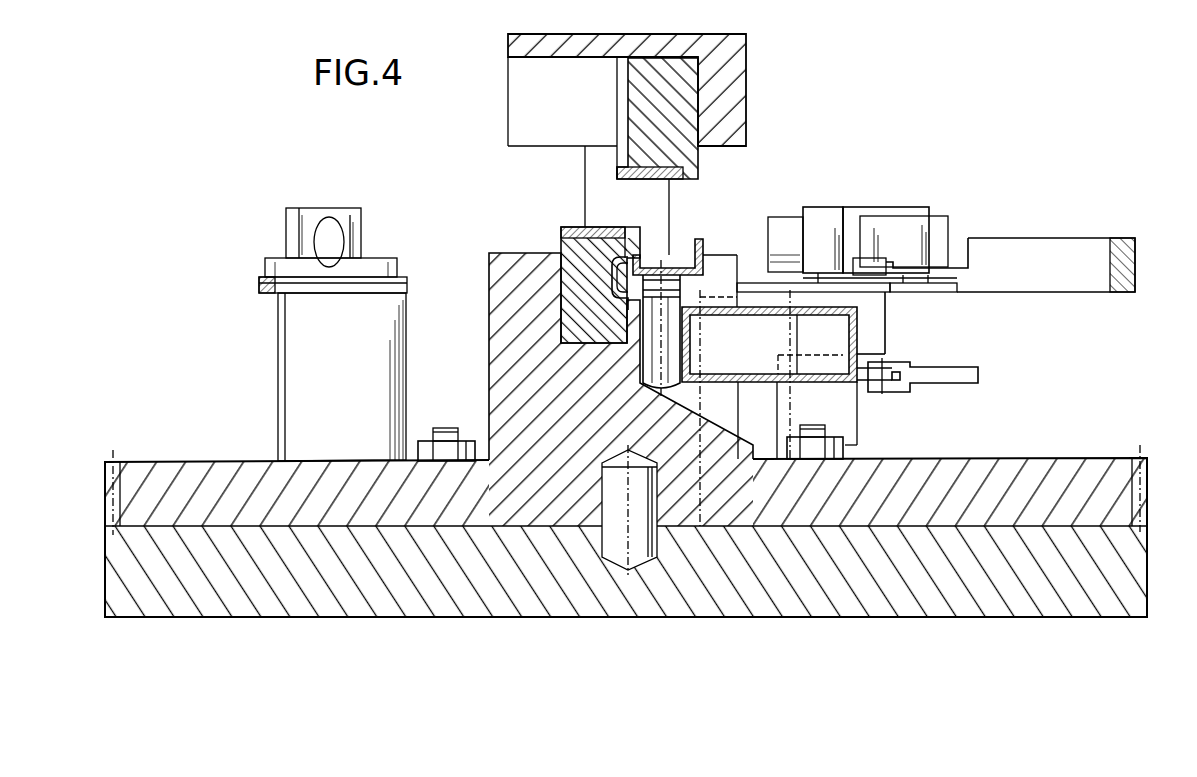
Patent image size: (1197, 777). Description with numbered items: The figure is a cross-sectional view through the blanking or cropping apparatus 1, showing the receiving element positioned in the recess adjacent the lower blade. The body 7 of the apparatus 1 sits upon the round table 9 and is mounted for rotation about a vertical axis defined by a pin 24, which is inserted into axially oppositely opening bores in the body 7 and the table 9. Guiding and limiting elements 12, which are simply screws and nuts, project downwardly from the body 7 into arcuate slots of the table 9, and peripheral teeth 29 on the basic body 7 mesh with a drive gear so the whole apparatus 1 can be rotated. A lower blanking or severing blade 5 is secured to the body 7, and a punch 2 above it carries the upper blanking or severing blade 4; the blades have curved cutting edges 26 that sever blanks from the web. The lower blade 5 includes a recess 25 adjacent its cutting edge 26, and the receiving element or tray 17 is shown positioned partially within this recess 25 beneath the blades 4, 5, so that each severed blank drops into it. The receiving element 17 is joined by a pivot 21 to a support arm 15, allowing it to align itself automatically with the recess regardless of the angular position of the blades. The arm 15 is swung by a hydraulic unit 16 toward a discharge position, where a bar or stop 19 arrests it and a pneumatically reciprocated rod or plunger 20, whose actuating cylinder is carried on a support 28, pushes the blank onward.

The blanking or cropping apparatus 1 is at (516, 178).
The punch 2 is at (737, 52).
The upper blanking or severing blade 4 is at (698, 98).
The lower blanking or severing blade 5 is at (571, 231).
The body 7 is at (489, 362).
The round table 9 is at (210, 545).
The guiding and limiting elements 12 is at (447, 432).
The support arm 15 is at (850, 407).
The hydraulic unit 16 is at (962, 375).
The receiving element or tray 17 is at (684, 250).
The bar or stop 19 is at (1065, 240).
The rod or plunger 20 is at (906, 225).
The pivot 21 is at (657, 362).
The vertical axis or pin 24 is at (643, 517).
The recess 25 is at (612, 283).
The cutting edge 26 is at (632, 227).
The support 28 is at (874, 322).
The peripheral teeth 29 is at (1140, 484).